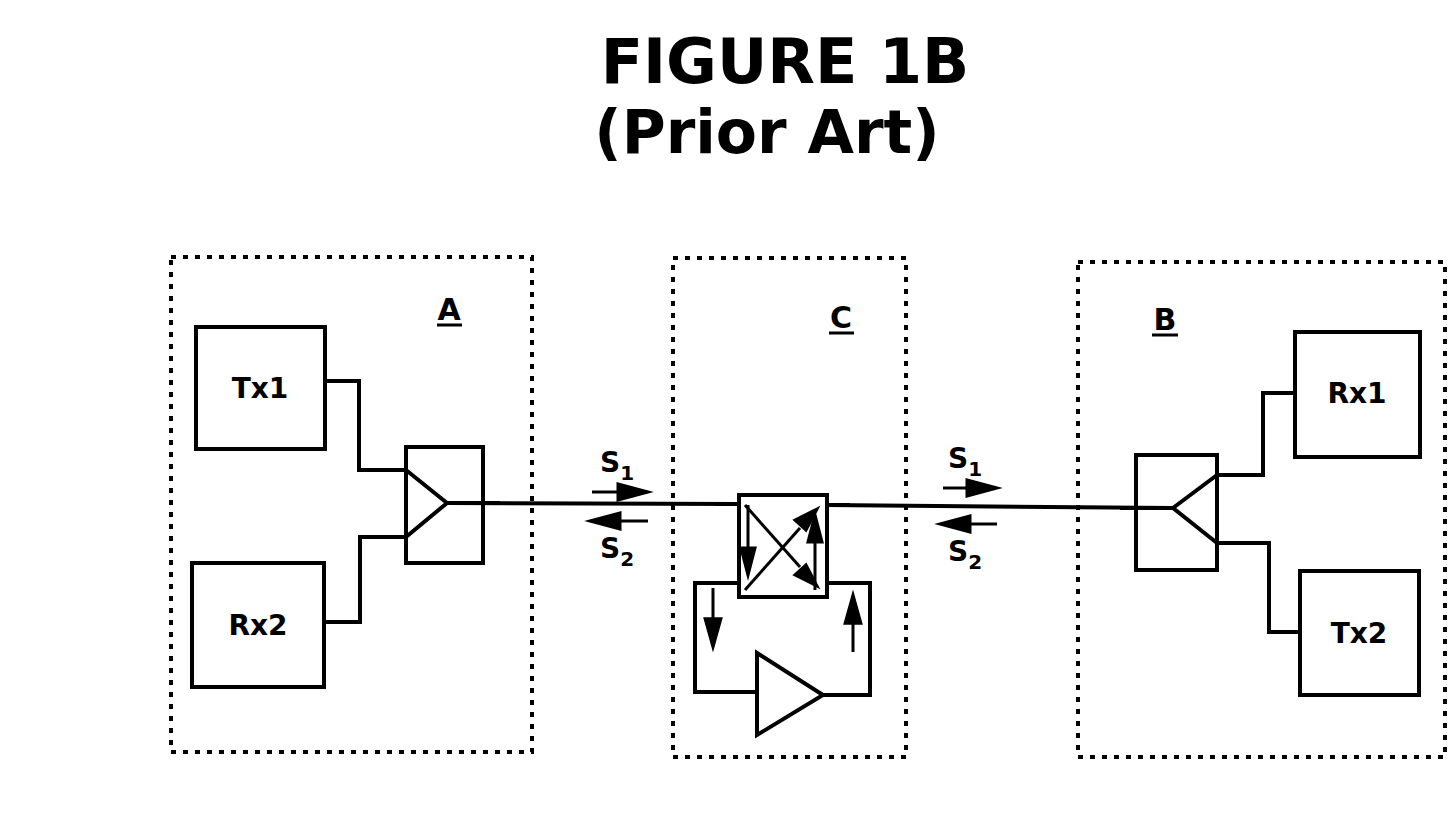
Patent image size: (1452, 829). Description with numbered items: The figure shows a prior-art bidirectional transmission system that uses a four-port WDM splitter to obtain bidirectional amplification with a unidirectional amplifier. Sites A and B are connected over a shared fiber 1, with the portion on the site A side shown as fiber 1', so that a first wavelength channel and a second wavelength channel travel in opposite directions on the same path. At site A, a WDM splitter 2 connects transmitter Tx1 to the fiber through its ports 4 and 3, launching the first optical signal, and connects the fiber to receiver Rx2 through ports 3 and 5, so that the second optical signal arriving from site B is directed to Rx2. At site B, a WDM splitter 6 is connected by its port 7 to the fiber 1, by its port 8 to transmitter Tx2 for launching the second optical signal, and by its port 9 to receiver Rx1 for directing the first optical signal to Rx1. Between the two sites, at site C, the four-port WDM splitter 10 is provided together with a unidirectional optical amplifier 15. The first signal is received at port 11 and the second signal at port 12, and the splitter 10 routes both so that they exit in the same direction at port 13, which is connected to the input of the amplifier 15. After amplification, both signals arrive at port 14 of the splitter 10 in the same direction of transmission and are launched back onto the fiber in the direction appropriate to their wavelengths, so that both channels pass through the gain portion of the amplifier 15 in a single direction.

The fiber 1 is at (1000, 449).
The fiber 1' is at (593, 442).
The WDM splitter 2 is at (462, 565).
The port 3 is at (480, 526).
The port 4 is at (365, 425).
The port 5 is at (365, 579).
The WDM splitter 6 is at (1152, 462).
The port 7 is at (1138, 530).
The port 8 is at (1258, 587).
The port 9 is at (1256, 434).
The four-port WDM splitter 10 is at (767, 494).
The port 11 is at (718, 486).
The port 12 is at (843, 486).
The port 13 is at (723, 615).
The port 14 is at (848, 616).
The unidirectional optical amplifier 15 is at (793, 715).